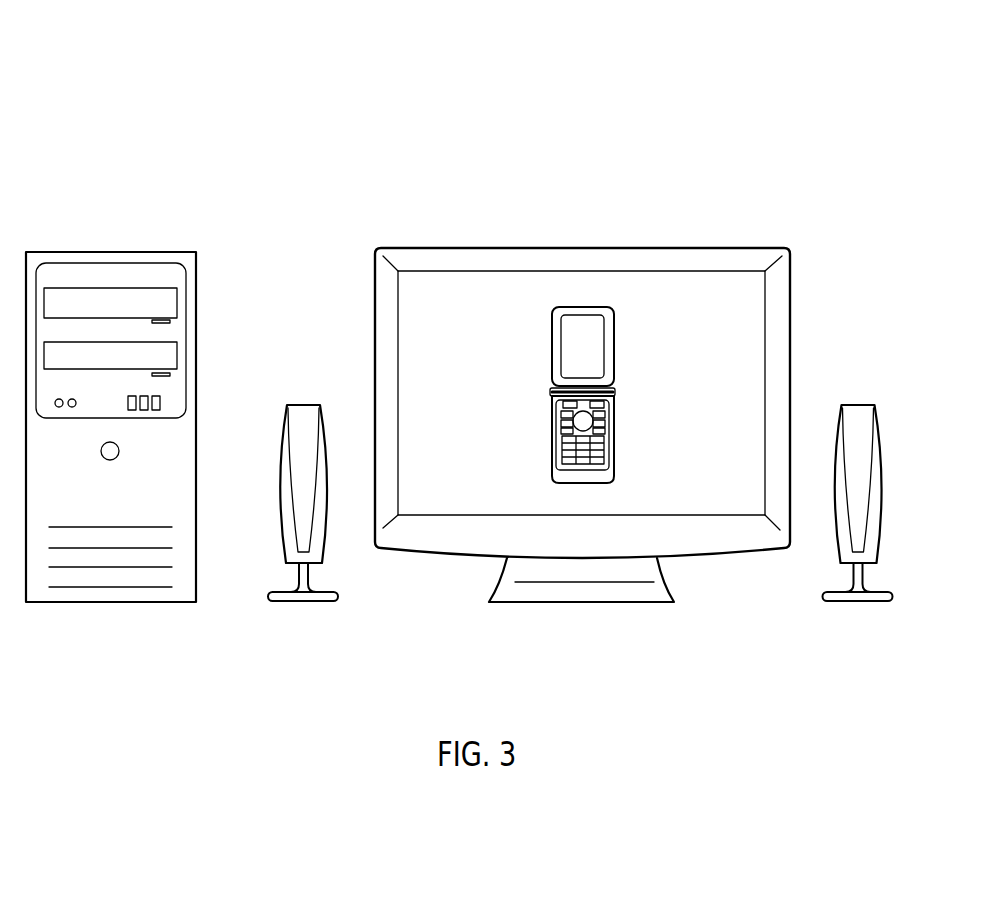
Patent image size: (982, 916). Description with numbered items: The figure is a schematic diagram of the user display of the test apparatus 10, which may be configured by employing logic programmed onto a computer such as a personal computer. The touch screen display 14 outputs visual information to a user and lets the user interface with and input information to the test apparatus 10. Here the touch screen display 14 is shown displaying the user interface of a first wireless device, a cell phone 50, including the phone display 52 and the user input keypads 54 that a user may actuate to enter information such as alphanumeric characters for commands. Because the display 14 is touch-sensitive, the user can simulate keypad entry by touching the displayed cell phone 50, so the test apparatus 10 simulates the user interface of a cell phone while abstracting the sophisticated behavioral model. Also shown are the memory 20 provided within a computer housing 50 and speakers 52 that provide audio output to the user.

The test apparatus 10 is at (136, 95).
The touch screen display 14 is at (688, 247).
The memory 20 is at (163, 303).
The cell phone 50 is at (148, 252).
The phone display 52 is at (592, 349).
The user input keypads 54 is at (607, 404).